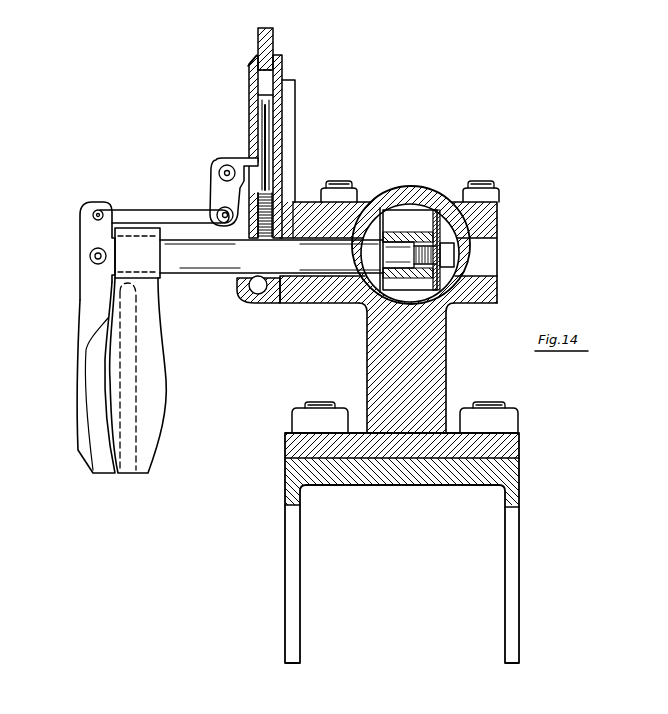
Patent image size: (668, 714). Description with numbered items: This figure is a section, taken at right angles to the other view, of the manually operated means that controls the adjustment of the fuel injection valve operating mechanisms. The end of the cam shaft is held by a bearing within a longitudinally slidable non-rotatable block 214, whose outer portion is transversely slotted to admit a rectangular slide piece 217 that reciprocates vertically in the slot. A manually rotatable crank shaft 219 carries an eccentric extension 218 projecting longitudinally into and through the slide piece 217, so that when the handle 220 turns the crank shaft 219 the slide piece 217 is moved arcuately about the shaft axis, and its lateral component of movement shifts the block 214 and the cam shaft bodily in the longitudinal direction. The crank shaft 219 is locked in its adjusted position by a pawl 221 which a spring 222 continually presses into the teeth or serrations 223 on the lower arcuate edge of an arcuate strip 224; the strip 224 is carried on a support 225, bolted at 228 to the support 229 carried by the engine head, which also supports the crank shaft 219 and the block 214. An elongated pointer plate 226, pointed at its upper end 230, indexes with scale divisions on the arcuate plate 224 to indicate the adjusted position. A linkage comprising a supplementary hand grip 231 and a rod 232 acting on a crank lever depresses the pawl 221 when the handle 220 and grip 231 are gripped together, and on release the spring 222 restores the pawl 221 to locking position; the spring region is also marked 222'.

The longitudinally slidable non-rotatable block 214 is at (446, 303).
The rectangular slide piece 217 is at (448, 268).
The eccentric extension 218 is at (404, 233).
The manually rotatable crank shaft 219 is at (303, 261).
The handle 220 is at (150, 374).
The pawl 221 is at (268, 83).
The spring 222 is at (297, 145).
The spring 222' is at (292, 205).
The teeth or serrations 223 is at (279, 68).
The arcuate strip 224 is at (275, 36).
The support 225 is at (284, 108).
The pointer plate 226 is at (253, 93).
The bolt 228 is at (217, 194).
The support carried by the engine head 229 is at (447, 383).
The upper end 230 is at (254, 58).
The supplementary hand grip 231 is at (88, 437).
The rod 232 is at (141, 212).